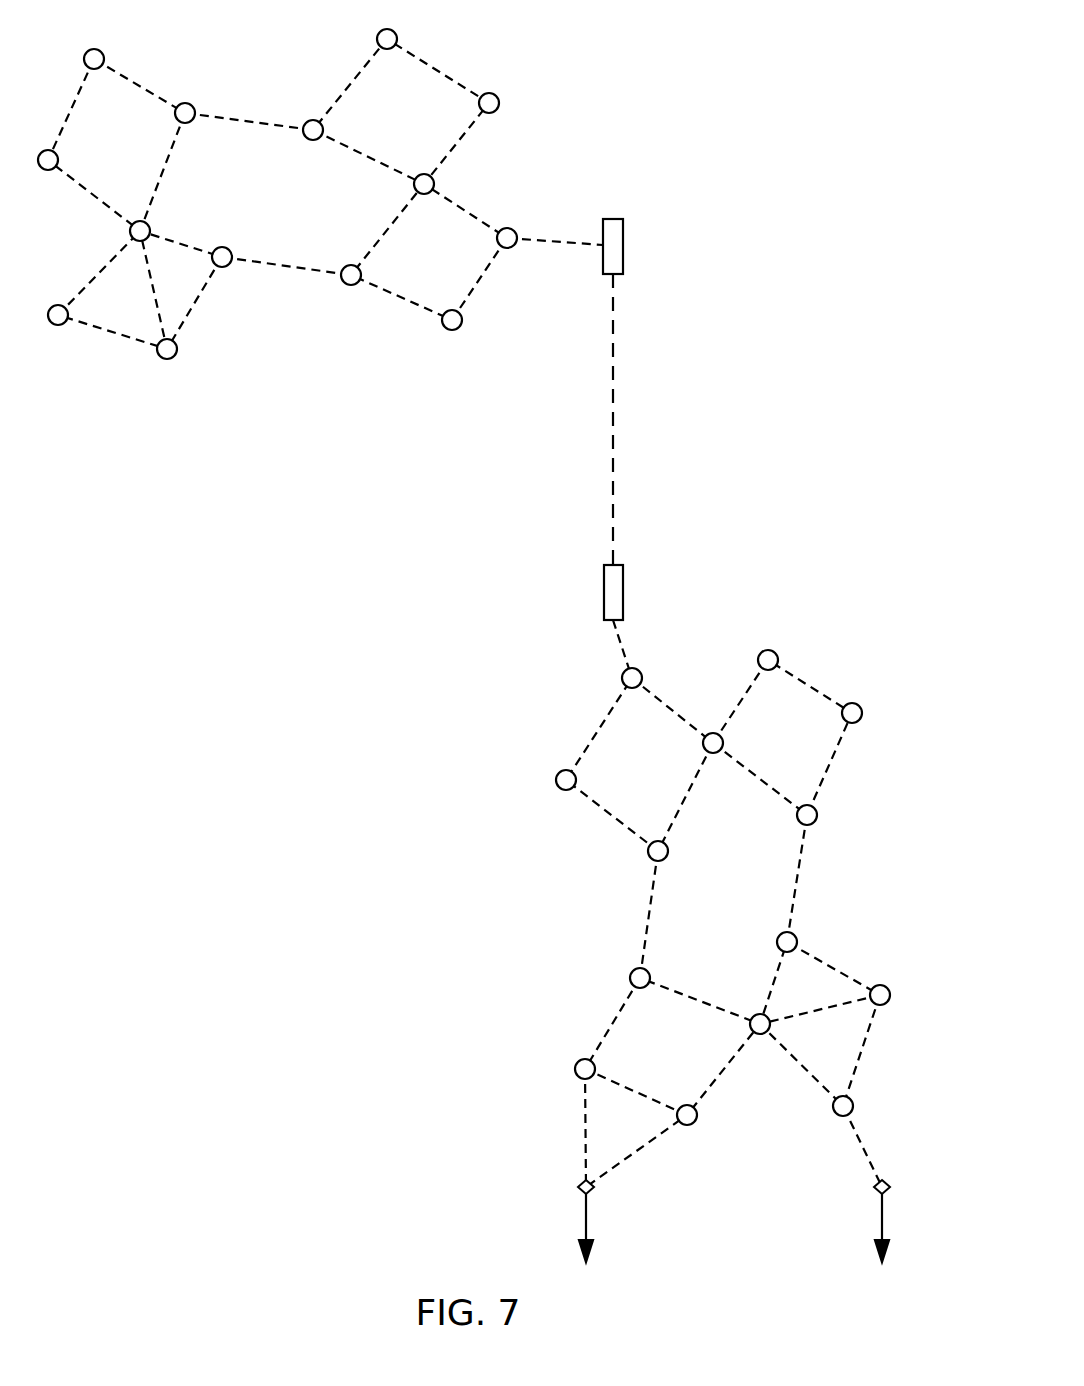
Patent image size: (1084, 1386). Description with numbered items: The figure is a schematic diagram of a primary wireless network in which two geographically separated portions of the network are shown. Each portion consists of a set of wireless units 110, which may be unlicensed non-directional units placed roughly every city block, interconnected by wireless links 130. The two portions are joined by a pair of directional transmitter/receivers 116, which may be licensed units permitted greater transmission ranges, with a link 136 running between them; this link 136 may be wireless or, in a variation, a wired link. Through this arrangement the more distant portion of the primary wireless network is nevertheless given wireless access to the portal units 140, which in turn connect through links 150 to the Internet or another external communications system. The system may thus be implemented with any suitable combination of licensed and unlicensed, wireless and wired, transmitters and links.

The wireless unit 110 is at (379, 40).
The wireless link 130 is at (473, 218).
The directional transmitter/receiver 116 is at (618, 245).
The wireless link 136 is at (613, 428).
The portal unit 140 is at (580, 1185).
The link 150 is at (586, 1228).